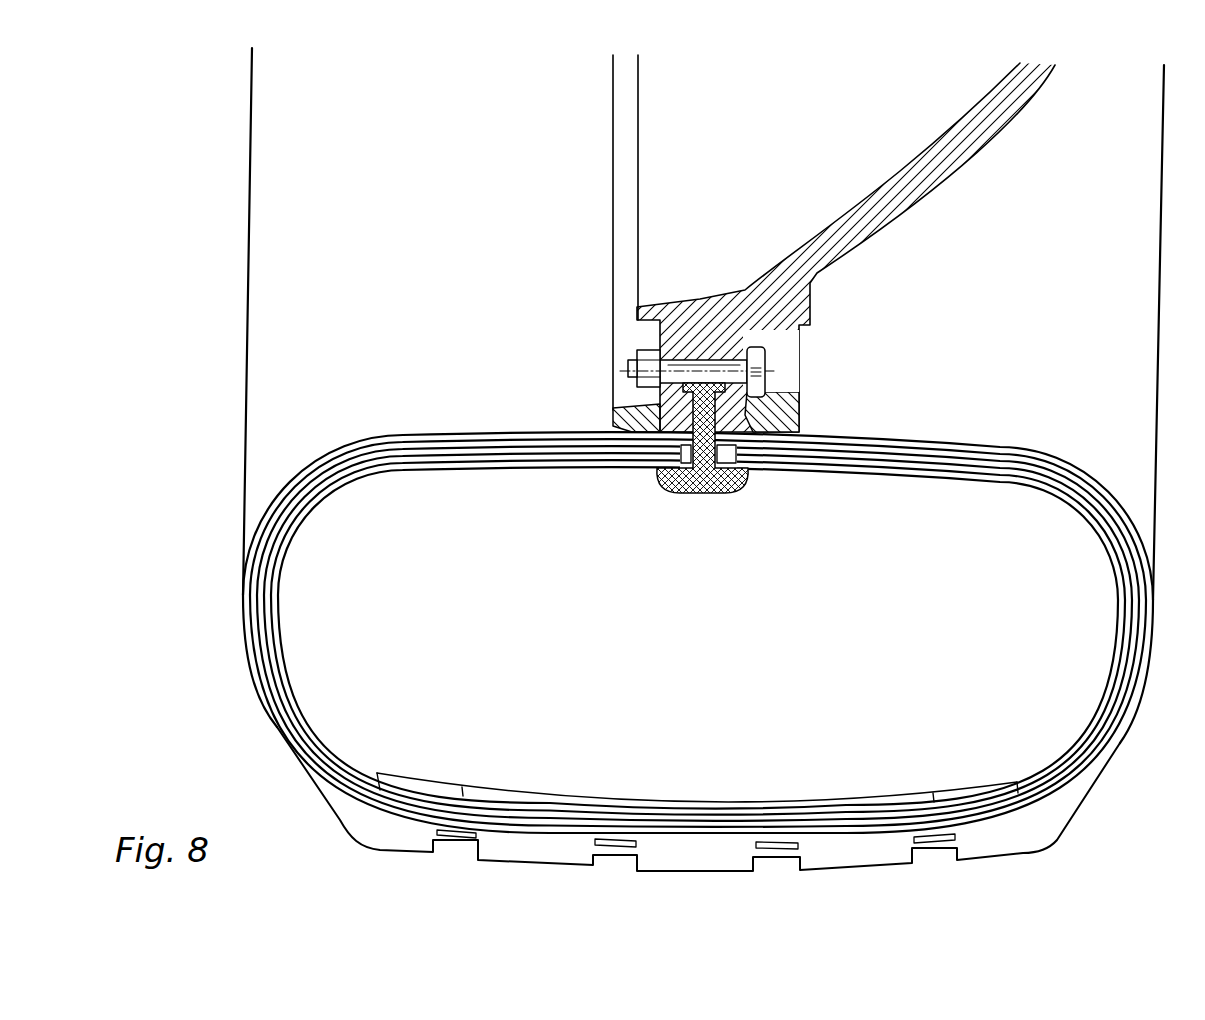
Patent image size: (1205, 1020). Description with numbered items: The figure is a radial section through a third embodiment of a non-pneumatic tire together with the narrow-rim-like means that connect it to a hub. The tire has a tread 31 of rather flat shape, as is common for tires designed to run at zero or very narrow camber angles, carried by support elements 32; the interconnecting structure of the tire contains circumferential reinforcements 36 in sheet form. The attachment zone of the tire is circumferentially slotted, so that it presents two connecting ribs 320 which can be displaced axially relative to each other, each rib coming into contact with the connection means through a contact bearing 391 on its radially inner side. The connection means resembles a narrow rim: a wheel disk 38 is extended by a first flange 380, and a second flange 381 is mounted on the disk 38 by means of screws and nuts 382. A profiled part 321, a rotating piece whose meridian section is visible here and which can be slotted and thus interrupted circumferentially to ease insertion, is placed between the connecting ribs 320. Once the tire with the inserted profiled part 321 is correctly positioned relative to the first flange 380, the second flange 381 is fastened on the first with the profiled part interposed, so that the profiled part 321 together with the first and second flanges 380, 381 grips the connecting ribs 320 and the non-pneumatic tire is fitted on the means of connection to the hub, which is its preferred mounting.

The tread 31 is at (678, 857).
The support elements 32 is at (277, 727).
The circumferential reinforcements 36 is at (452, 830).
The wheel disk 38 is at (683, 325).
The first flange 380 is at (640, 425).
The second flange 381 is at (765, 418).
The screws and nuts 382 is at (760, 389).
The contact bearing 391 is at (660, 418).
The connecting ribs 320 is at (672, 447).
The profiled part 321 is at (689, 470).